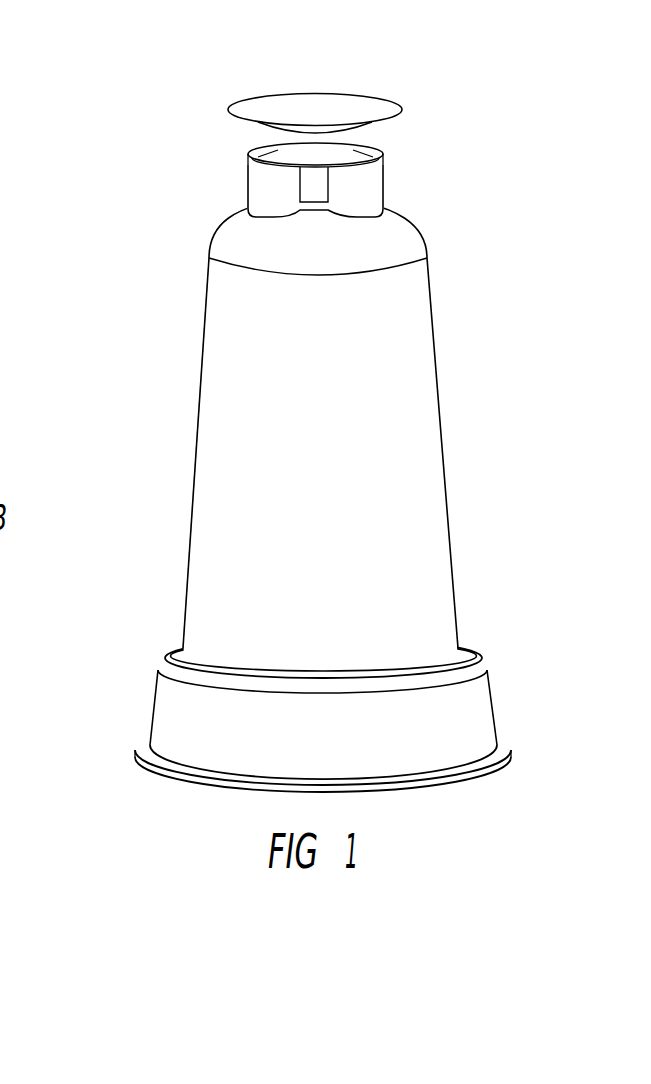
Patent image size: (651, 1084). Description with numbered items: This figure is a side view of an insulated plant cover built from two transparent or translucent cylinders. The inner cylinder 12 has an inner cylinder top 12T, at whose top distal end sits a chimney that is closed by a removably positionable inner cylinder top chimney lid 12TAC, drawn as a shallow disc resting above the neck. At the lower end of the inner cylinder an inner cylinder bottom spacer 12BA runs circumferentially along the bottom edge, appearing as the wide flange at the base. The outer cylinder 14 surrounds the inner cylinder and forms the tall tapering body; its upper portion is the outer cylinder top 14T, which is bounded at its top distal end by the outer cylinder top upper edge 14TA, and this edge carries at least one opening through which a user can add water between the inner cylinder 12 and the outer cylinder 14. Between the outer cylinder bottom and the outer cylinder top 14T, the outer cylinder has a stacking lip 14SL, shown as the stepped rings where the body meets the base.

The inner cylinder 12 is at (257, 148).
The inner cylinder top 12T is at (255, 158).
The inner cylinder top chimney lid 12TAC is at (299, 104).
The inner cylinder bottom spacer 12BA is at (510, 757).
The outer cylinder 14 is at (238, 408).
The outer cylinder top upper edge 14TA is at (373, 143).
The stacking lip 14SL is at (165, 650).
The outer cylinder top 14T is at (502, 745).